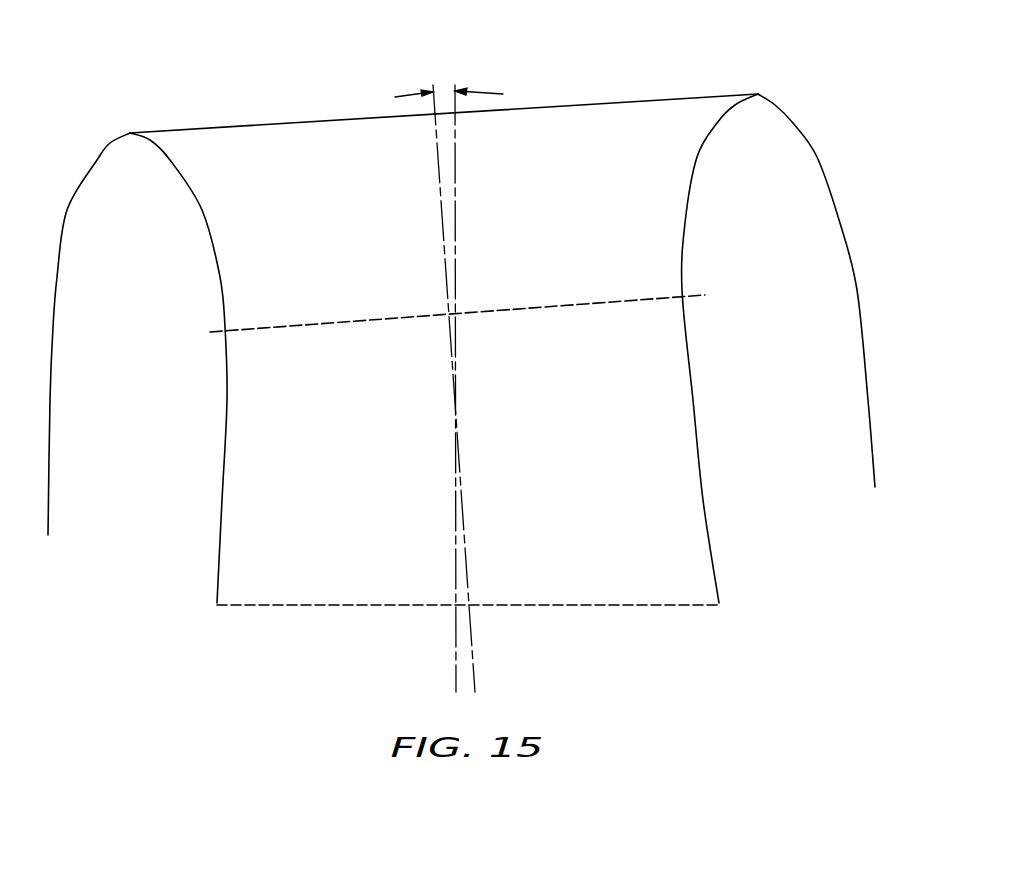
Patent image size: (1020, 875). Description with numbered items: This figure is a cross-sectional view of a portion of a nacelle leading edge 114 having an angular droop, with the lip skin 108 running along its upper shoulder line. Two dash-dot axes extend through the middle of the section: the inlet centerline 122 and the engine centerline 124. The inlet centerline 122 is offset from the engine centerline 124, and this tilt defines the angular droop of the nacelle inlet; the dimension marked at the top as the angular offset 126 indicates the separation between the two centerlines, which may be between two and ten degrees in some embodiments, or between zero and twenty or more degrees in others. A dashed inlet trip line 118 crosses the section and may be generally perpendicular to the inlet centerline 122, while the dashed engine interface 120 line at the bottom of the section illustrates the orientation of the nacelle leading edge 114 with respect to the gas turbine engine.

The lip skin 108 is at (583, 106).
The nacelle leading edge 114 is at (733, 72).
The inlet trip line 118 is at (282, 330).
The engine interface line 120 is at (582, 605).
The inlet centerline 122 is at (440, 198).
The engine centerline 124 is at (457, 188).
The angular offset 126 is at (503, 93).